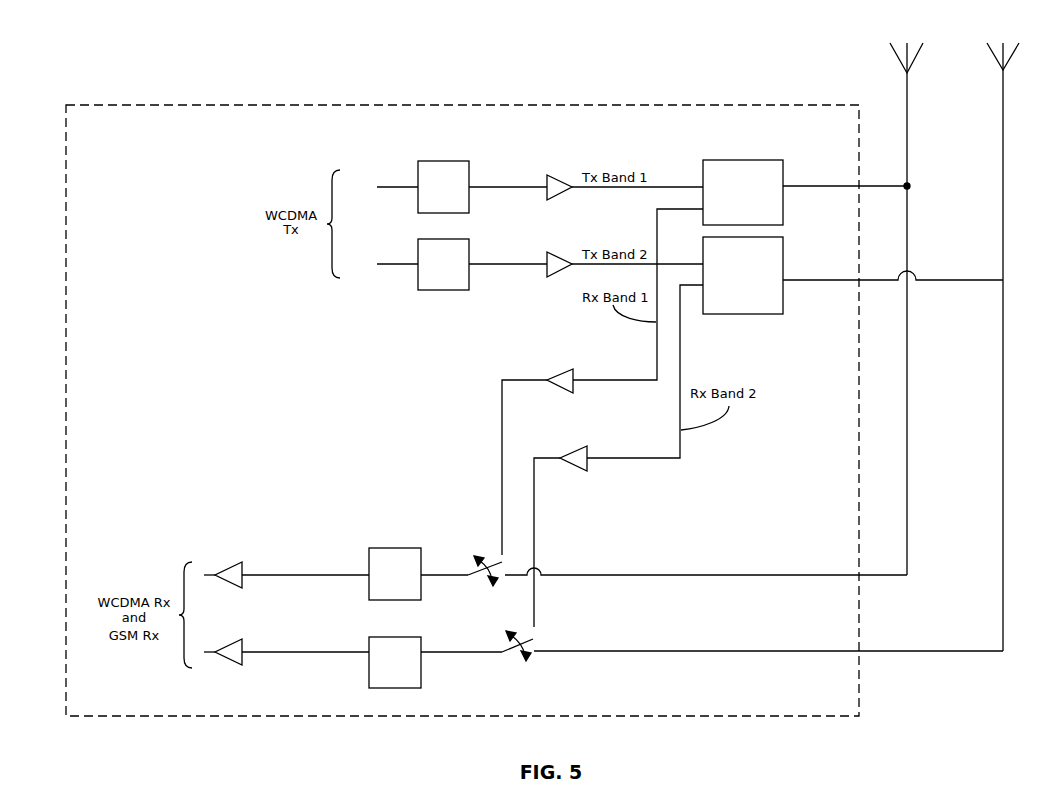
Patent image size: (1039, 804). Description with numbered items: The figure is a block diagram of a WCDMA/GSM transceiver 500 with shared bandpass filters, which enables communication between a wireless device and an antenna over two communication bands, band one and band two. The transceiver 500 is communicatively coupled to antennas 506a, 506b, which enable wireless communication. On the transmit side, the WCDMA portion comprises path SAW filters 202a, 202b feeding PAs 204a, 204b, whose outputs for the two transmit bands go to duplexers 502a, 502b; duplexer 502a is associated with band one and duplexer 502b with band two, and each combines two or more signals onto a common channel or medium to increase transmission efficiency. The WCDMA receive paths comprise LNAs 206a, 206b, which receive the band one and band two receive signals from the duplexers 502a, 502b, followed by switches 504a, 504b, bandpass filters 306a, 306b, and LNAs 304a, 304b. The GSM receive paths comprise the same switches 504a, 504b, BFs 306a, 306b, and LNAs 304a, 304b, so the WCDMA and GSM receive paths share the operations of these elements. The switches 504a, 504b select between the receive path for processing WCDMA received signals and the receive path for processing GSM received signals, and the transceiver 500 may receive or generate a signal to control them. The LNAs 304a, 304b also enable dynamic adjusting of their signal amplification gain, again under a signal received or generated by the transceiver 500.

The WCDMA/GSM transceiver 500 is at (357, 42).
The SAW filter 202a is at (418, 170).
The SAW filter 202b is at (418, 249).
The PA 204a is at (547, 181).
The PA 204b is at (547, 258).
The LNA 206a is at (551, 375).
The LNA 206b is at (562, 452).
The duplexer 502a is at (703, 168).
The duplexer 502b is at (743, 314).
The switch 504a is at (480, 555).
The switch 504b is at (512, 660).
The antenna 506a is at (907, 88).
The antenna 506b is at (1003, 84).
The LNA 304a is at (244, 572).
The LNA 304b is at (244, 648).
The bandpass filter 306a is at (369, 588).
The bandpass filter 306b is at (369, 678).